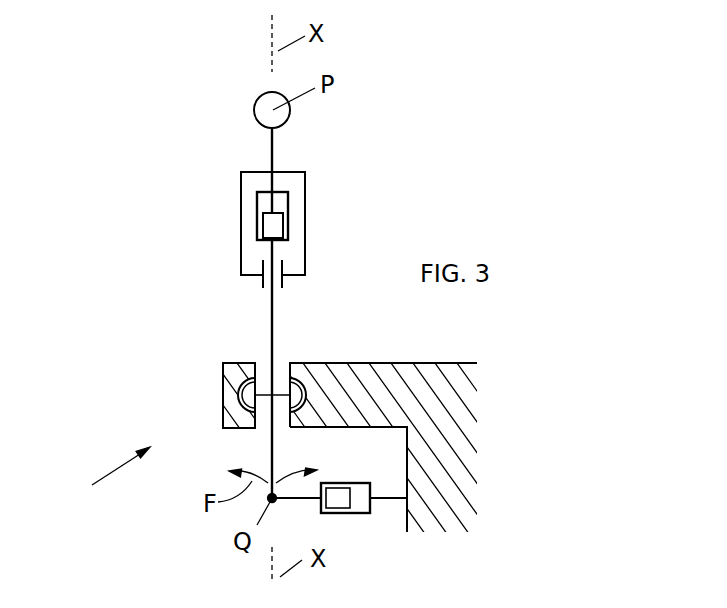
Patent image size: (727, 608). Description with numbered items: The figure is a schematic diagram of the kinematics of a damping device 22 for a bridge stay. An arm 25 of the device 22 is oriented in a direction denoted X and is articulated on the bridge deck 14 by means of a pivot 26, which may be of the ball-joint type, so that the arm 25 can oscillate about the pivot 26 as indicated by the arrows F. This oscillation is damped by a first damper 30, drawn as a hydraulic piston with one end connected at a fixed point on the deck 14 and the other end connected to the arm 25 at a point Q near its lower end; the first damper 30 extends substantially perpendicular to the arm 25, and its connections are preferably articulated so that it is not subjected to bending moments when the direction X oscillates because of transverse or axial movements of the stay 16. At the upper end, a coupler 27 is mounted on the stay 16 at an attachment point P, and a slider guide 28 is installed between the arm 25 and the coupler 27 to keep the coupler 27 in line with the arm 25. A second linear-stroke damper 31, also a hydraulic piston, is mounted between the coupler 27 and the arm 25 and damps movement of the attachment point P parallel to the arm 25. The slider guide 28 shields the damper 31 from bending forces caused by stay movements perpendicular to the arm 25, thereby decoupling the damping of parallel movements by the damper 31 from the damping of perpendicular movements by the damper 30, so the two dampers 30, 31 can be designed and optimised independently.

The deck 14 is at (368, 368).
The stay 16 is at (257, 98).
The damping device 22 is at (105, 475).
The arm 25 is at (271, 323).
The pivot 26 is at (236, 422).
The coupler 27 is at (274, 153).
The slider guide 28 is at (304, 218).
The first damper 30 is at (342, 515).
The second linear-stroke damper 31 is at (259, 220).